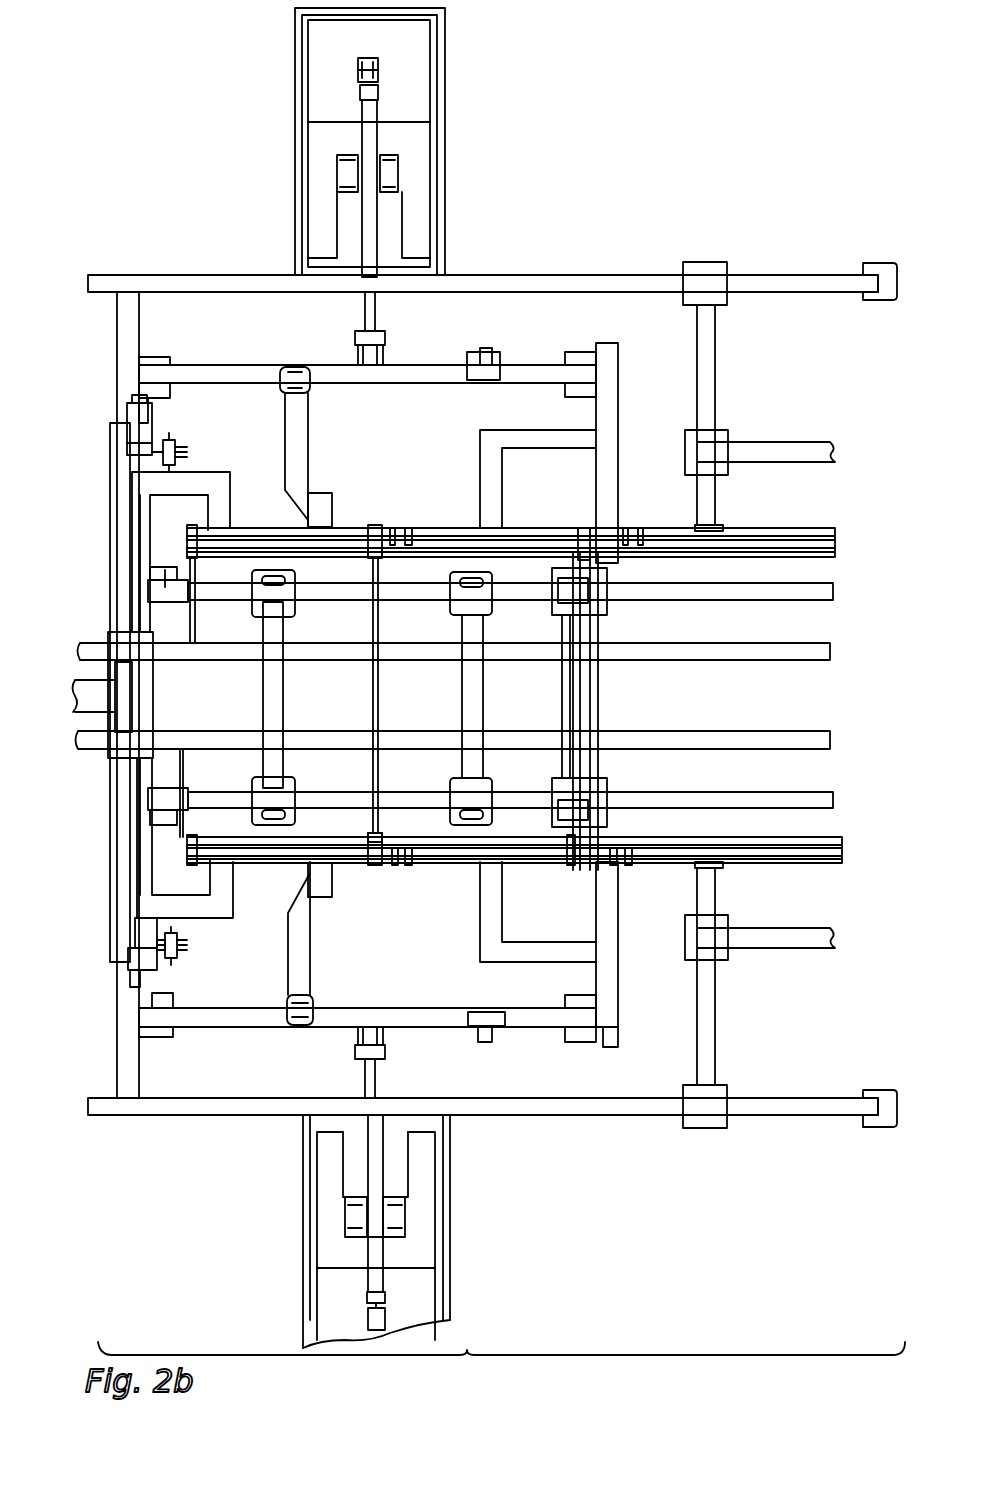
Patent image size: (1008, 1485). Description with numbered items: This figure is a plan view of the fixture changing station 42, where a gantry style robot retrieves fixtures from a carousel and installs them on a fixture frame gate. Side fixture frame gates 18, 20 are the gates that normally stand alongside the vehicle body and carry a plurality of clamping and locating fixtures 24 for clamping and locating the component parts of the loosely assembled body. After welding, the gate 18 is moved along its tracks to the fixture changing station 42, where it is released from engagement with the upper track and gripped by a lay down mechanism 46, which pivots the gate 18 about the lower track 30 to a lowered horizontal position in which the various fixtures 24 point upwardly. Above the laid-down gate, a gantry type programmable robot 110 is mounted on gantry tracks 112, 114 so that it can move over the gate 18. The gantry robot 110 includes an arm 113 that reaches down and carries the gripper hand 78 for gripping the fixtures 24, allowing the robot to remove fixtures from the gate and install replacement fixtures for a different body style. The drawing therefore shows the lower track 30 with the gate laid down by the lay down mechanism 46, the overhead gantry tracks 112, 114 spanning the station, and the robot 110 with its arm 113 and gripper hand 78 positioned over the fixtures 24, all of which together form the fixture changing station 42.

The gantry track 112 is at (560, 282).
The side fixture frame gate 20 is at (428, 372).
The side fixture frame gate 18 is at (218, 1022).
The clamping and locating fixture 24 is at (303, 1025).
The lower track 30 is at (643, 802).
The gantry type programmable robot 110 is at (140, 702).
The gantry track 114 is at (360, 662).
The gripper hand 78 is at (187, 942).
The arm 113 is at (165, 948).
The lay down mechanism 46 is at (370, 1178).
The fixture changing station 42 is at (501, 1371).